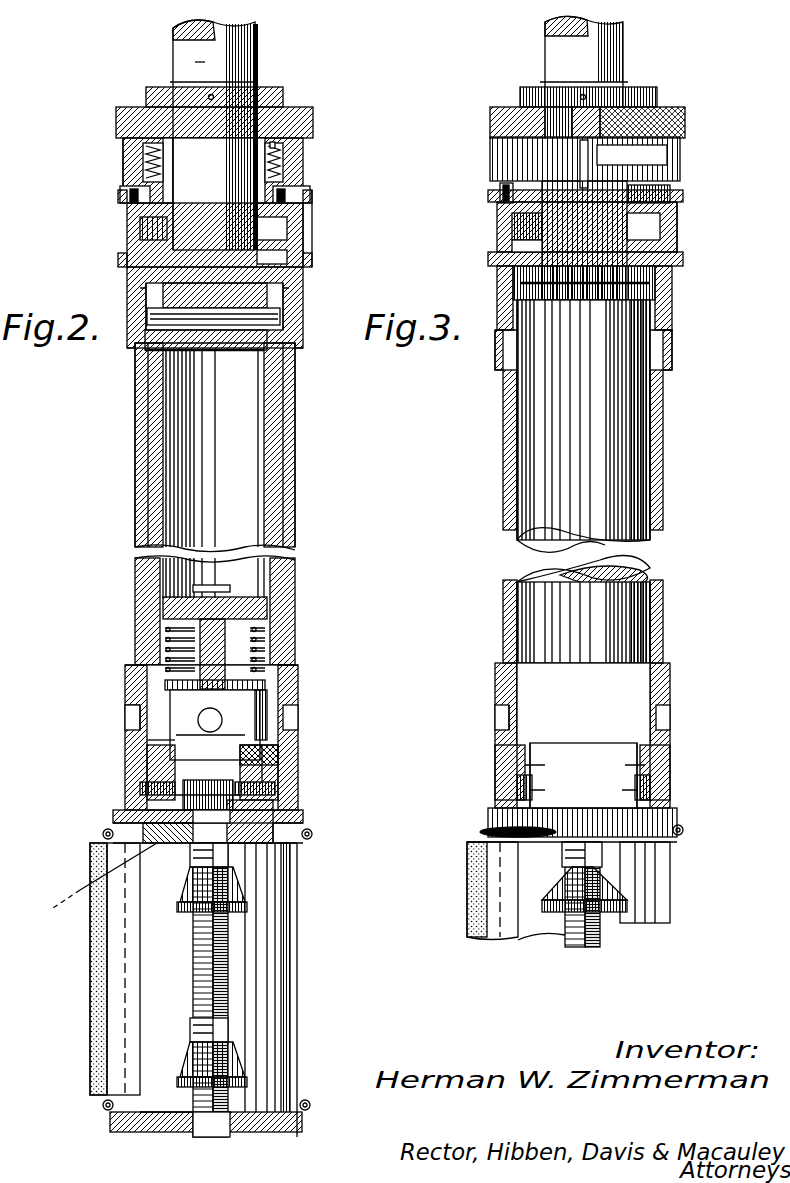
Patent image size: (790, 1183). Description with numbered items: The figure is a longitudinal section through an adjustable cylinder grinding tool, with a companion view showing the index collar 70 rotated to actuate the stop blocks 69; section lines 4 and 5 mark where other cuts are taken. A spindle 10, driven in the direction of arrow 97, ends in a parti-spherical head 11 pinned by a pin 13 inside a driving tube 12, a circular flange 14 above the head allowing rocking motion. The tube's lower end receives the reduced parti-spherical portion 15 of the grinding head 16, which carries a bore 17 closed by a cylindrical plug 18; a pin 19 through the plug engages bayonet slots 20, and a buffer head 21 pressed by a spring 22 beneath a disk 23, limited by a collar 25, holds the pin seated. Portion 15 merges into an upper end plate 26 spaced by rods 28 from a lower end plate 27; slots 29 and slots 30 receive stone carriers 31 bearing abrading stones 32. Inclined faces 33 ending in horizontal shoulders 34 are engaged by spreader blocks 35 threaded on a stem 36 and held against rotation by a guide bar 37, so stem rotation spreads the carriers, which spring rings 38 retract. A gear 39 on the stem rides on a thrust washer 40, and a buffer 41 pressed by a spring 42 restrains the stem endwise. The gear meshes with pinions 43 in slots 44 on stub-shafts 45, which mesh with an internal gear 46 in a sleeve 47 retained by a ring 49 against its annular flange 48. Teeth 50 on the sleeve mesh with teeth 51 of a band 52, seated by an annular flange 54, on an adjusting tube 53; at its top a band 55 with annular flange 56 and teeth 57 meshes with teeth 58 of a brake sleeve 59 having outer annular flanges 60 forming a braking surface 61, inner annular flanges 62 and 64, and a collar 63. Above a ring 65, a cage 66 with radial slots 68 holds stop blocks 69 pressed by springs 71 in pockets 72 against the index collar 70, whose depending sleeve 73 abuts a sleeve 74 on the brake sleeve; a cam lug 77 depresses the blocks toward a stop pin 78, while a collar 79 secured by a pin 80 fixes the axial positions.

In FIG. 2, the section line 4- 4 is at (82, 200).
In FIG. 2, the section line 5- 5 is at (95, 815).
In FIG. 2, the spindle 10 is at (258, 40).
In FIG. 3, the spindle 10 is at (548, 38).
In FIG. 2, the parti-spherical head 11 is at (290, 378).
In FIG. 2, the driving tube 12 is at (280, 437).
In FIG. 3, the driving tube 12 is at (632, 480).
In FIG. 2, the pin 13 is at (231, 323).
In FIG. 2, the circular flange 14 is at (305, 274).
In FIG. 3, the circular flange 14 is at (674, 283).
In FIG. 2, the reduced parti-spherical portion 15 is at (262, 695).
In FIG. 3, the reduced parti-spherical portion 15 is at (567, 757).
In FIG. 2, the grinding head 16 is at (302, 846).
In FIG. 3, the grinding head 16 is at (674, 847).
In FIG. 2, the bore 17 is at (222, 720).
In FIG. 2, the cylindrical plug 18 is at (200, 725).
In FIG. 2, the pin 19 is at (150, 737).
In FIG. 2, the bayonet slots 20 is at (270, 690).
In FIG. 2, the buffer head 21 is at (265, 683).
In FIG. 2, the spring 22 is at (258, 642).
In FIG. 2, the disk 23 is at (260, 608).
In FIG. 2, the collar 25 is at (195, 588).
In FIG. 2, the upper end plate 26 is at (305, 822).
In FIG. 3, the upper end plate 26 is at (677, 815).
In FIG. 2, the lower end plate 27 is at (210, 635).
In FIG. 2, the rods 28 is at (297, 990).
In FIG. 2, the slots 29 is at (72, 967).
In FIG. 2, the slots 30 is at (140, 1120).
In FIG. 2, the stone carriers 31 is at (175, 1120).
In FIG. 3, the stone carriers 31 is at (543, 930).
In FIG. 2, the abrading stone 32 is at (92, 1070).
In FIG. 3, the abrading stone 32 is at (475, 942).
In FIG. 2, the inclined faces 33 is at (193, 876).
In FIG. 3, the inclined faces 33 is at (562, 880).
In FIG. 2, the horizontal shoulders 34 is at (182, 912).
In FIG. 3, the horizontal shoulders 34 is at (565, 912).
In FIG. 2, the spreader blocks 35 is at (245, 895).
In FIG. 3, the spreader blocks 35 is at (625, 888).
In FIG. 2, the stem 36 is at (230, 1020).
In FIG. 3, the stem 36 is at (605, 935).
In FIG. 2, the guide bar 37 is at (257, 947).
In FIG. 3, the guide bar 37 is at (645, 915).
In FIG. 2, the spring rings 38 is at (312, 836).
In FIG. 3, the spring rings 38 is at (480, 830).
In FIG. 2, the gear 39 is at (195, 848).
In FIG. 2, the thrust washer 40 is at (90, 882).
In FIG. 2, the buffer 41 is at (277, 806).
In FIG. 2, the spring 42 is at (285, 777).
In FIG. 2, the pinions 43 is at (210, 794).
In FIG. 3, the pinions 43 is at (628, 792).
In FIG. 3, the slots 44 is at (628, 772).
In FIG. 2, the stub-shafts 45 is at (150, 783).
In FIG. 2, the internal gear 46 is at (140, 813).
In FIG. 3, the internal gear 46 is at (655, 790).
In FIG. 2, the sleeve 47 is at (150, 752).
In FIG. 3, the sleeve 47 is at (670, 757).
In FIG. 2, the annular flange 48 is at (255, 772).
In FIG. 3, the annular flange 48 is at (510, 780).
In FIG. 2, the ring 49 is at (147, 767).
In FIG. 3, the ring 49 is at (500, 762).
In FIG. 2, the teeth 50 is at (127, 712).
In FIG. 3, the teeth 50 is at (668, 716).
In FIG. 2, the teeth 51 is at (127, 720).
In FIG. 3, the teeth 51 is at (497, 718).
In FIG. 2, the band 52 is at (135, 682).
In FIG. 3, the band 52 is at (672, 678).
In FIG. 2, the adjusting tube 53 is at (130, 650).
In FIG. 3, the adjusting tube 53 is at (505, 492).
In FIG. 2, the annular flange 54 is at (125, 700).
In FIG. 2, the band 55 is at (135, 365).
In FIG. 2, the annular flange 56 is at (130, 343).
In FIG. 2, the teeth 57 is at (285, 314).
In FIG. 2, the teeth 58 is at (285, 329).
In FIG. 2, the brake sleeve 59 is at (127, 280).
In FIG. 3, the brake sleeve 59 is at (672, 302).
In FIG. 2, the annular flanges 60 is at (313, 198).
In FIG. 3, the annular flanges 60 is at (684, 198).
In FIG. 2, the braking surface 61 is at (305, 230).
In FIG. 3, the braking surface 61 is at (678, 224).
In FIG. 2, the annular flange 62 is at (127, 247).
In FIG. 3, the annular flange 62 is at (510, 248).
In FIG. 2, the collar 63 is at (305, 256).
In FIG. 3, the collar 63 is at (540, 262).
In FIG. 2, the annular flange 64 is at (290, 215).
In FIG. 3, the annular flange 64 is at (540, 213).
In FIG. 2, the ring 65 is at (310, 195).
In FIG. 3, the ring 65 is at (650, 190).
In FIG. 2, the cage 66 is at (165, 140).
In FIG. 2, the radial slots 68 is at (276, 145).
In FIG. 2, the stop blocks 69 is at (125, 145).
In FIG. 2, the index collar 70 is at (120, 110).
In FIG. 3, the index collar 70 is at (686, 117).
In FIG. 2, the springs 71 is at (150, 165).
In FIG. 2, the pockets 72 is at (255, 168).
In FIG. 2, the depending sleeve 73 is at (123, 152).
In FIG. 3, the depending sleeve 73 is at (682, 152).
In FIG. 2, the sleeve 74 is at (125, 188).
In FIG. 3, the sleeve 74 is at (500, 188).
In FIG. 3, the cam lug 77 is at (584, 140).
In FIG. 2, the stop pin 78 is at (131, 200).
In FIG. 2, the collar 79 is at (147, 90).
In FIG. 3, the collar 79 is at (525, 90).
In FIG. 2, the pin 80 is at (214, 97).
In FIG. 3, the pin 80 is at (586, 96).
In FIG. 2, the arrow 97 is at (195, 62).